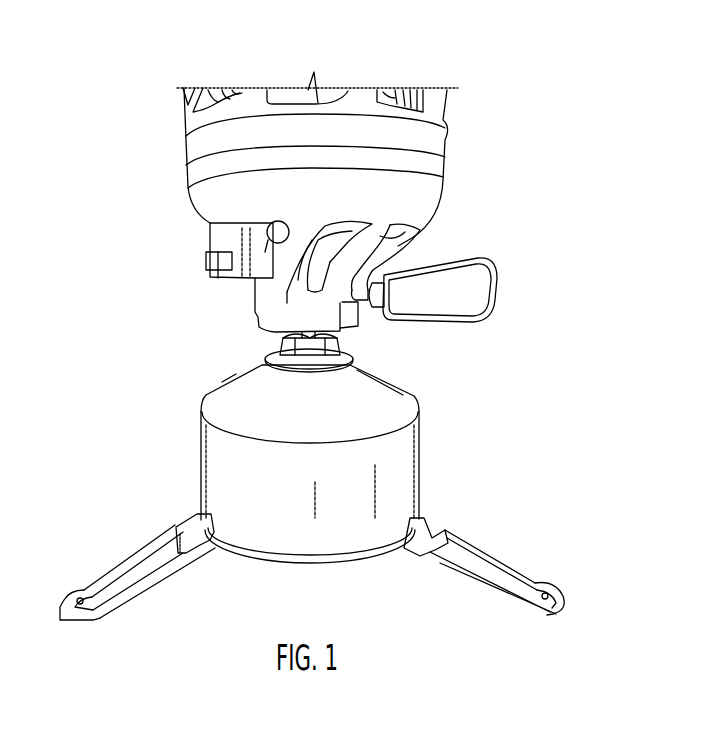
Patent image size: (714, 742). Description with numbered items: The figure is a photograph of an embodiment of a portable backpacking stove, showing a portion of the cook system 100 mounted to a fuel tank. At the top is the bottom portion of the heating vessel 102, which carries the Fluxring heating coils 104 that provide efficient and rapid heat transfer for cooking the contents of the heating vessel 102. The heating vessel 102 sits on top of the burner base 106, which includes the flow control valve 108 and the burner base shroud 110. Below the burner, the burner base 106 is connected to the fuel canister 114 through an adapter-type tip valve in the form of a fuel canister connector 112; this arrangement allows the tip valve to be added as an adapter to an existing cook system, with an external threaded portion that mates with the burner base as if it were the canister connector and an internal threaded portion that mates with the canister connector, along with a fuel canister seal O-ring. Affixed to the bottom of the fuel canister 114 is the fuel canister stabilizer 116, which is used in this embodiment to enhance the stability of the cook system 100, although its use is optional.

The cook system 100 is at (561, 189).
The heating vessel 102 is at (121, 118).
The Fluxring heating coils 104 is at (415, 88).
The burner base 106 is at (178, 172).
The flow control valve 108 is at (372, 314).
The burner base shroud 110 is at (422, 208).
The fuel canister connector 112 is at (355, 348).
The fuel canister 114 is at (403, 462).
The fuel canister stabilizer 116 is at (487, 565).